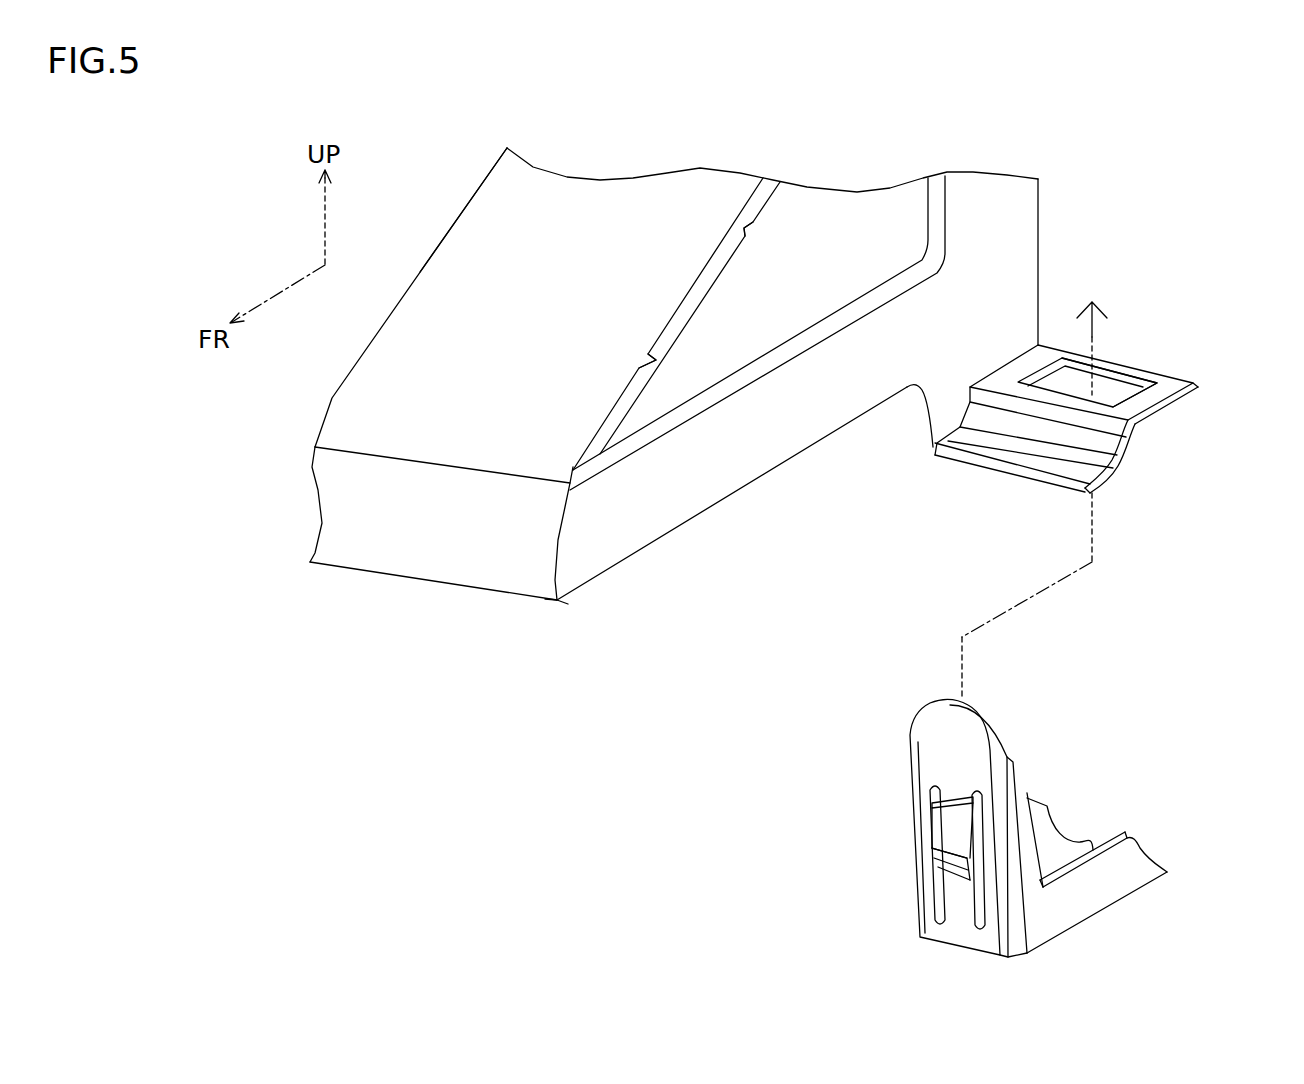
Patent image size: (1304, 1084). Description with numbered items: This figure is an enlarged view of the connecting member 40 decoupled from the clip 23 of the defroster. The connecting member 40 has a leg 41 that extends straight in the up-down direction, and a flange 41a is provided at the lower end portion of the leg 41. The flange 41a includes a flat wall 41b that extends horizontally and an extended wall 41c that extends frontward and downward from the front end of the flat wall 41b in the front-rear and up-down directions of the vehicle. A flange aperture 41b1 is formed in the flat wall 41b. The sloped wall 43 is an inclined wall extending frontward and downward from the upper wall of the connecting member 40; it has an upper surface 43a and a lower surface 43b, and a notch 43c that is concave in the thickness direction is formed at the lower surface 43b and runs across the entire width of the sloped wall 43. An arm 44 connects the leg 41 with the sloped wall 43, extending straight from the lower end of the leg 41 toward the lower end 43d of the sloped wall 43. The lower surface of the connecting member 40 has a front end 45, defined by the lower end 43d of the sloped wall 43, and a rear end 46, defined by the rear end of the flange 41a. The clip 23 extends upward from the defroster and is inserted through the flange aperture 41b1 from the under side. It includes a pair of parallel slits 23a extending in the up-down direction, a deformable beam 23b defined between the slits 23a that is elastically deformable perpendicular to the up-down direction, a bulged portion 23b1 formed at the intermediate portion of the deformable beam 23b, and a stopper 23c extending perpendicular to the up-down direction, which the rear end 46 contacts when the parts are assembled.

The connecting member 40 is at (1046, 211).
The leg 41 is at (973, 187).
The flange 41a is at (1155, 392).
The flat wall 41b is at (1160, 405).
The flange aperture 41b1 is at (1122, 388).
The extended wall 41c is at (1112, 462).
The sloped wall 43 is at (693, 188).
The upper surface 43a is at (590, 198).
The lower surface 43b is at (725, 272).
The notch 43c is at (748, 229).
The lower end of the sloped wall 43d is at (405, 557).
The arm 44 is at (772, 450).
The front end of the lower surface 45 is at (560, 603).
The rear end of the lower surface 46 is at (1197, 385).
The clip 23 is at (995, 724).
The slit 23a is at (972, 800).
The deformable beam 23b is at (958, 893).
The bulged portion 23b1 is at (937, 858).
The stopper 23c is at (1030, 803).